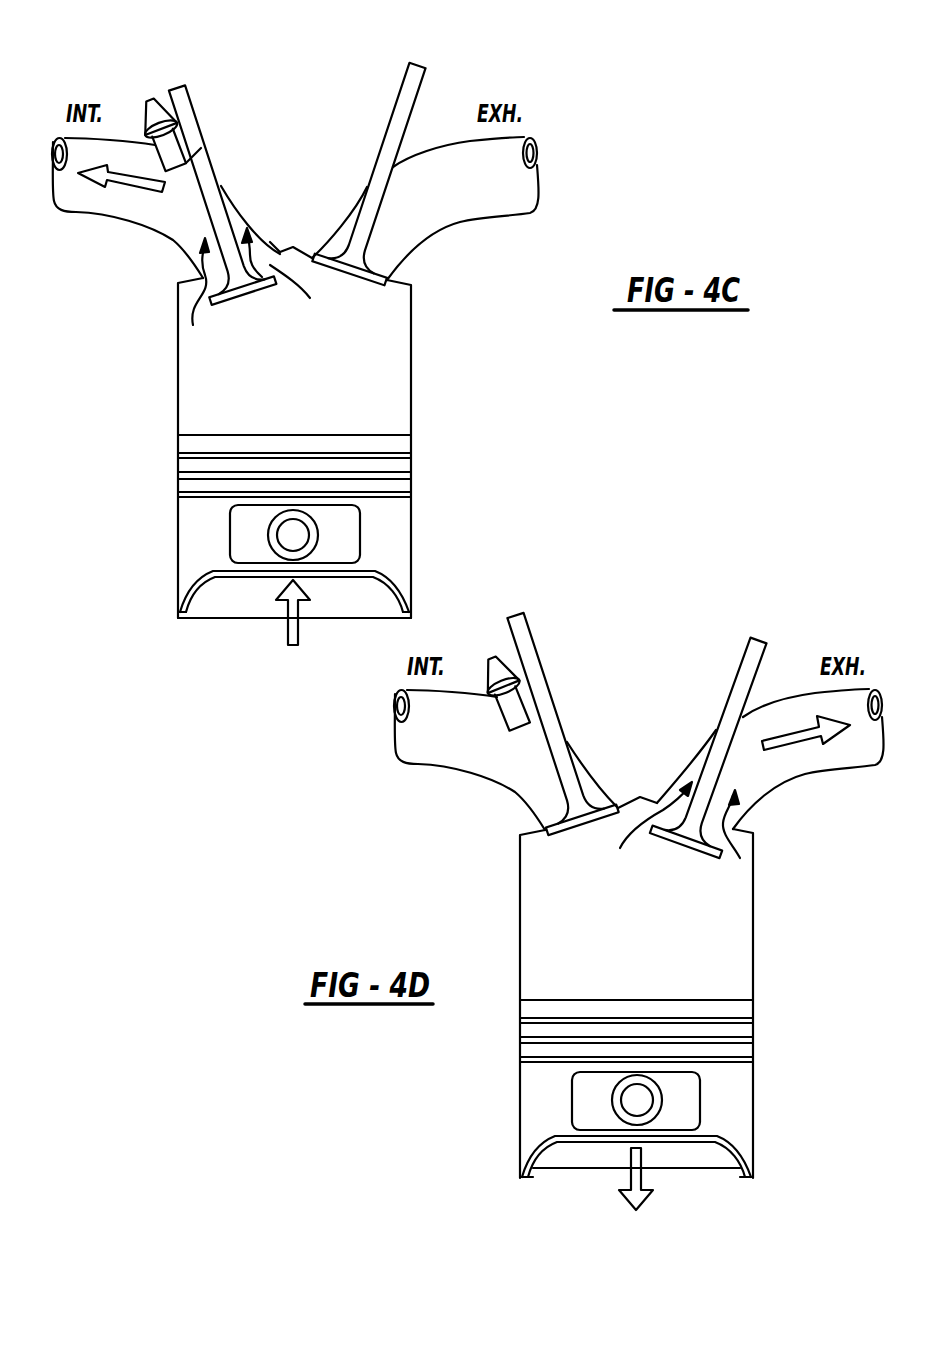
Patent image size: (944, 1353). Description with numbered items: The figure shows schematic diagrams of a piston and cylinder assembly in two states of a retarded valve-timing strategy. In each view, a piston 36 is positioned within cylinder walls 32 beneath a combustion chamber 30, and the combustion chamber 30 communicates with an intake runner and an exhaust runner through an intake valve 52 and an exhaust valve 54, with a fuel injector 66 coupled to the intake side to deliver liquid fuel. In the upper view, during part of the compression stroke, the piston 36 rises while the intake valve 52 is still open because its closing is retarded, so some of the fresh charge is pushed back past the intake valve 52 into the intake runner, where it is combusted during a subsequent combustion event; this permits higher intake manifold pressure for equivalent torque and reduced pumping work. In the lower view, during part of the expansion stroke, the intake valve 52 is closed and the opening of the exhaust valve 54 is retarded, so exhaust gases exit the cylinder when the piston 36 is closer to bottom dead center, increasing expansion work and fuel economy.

In FIG. 4C, the combustion chamber 30 is at (303, 341).
In FIG. 4D, the combustion chamber 30 is at (637, 895).
In FIG. 4C, the cylinder walls 32 is at (411, 355).
In FIG. 4D, the cylinder walls 32 is at (753, 905).
In FIG. 4C, the piston 36 is at (400, 536).
In FIG. 4D, the piston 36 is at (722, 1100).
In FIG. 4C, the intake valve 52 is at (210, 140).
In FIG. 4D, the intake valve 52 is at (545, 695).
In FIG. 4C, the exhaust valve 54 is at (395, 138).
In FIG. 4D, the exhaust valve 54 is at (736, 690).
In FIG. 4C, the fuel injector 66 is at (150, 100).
In FIG. 4D, the fuel injector 66 is at (492, 658).